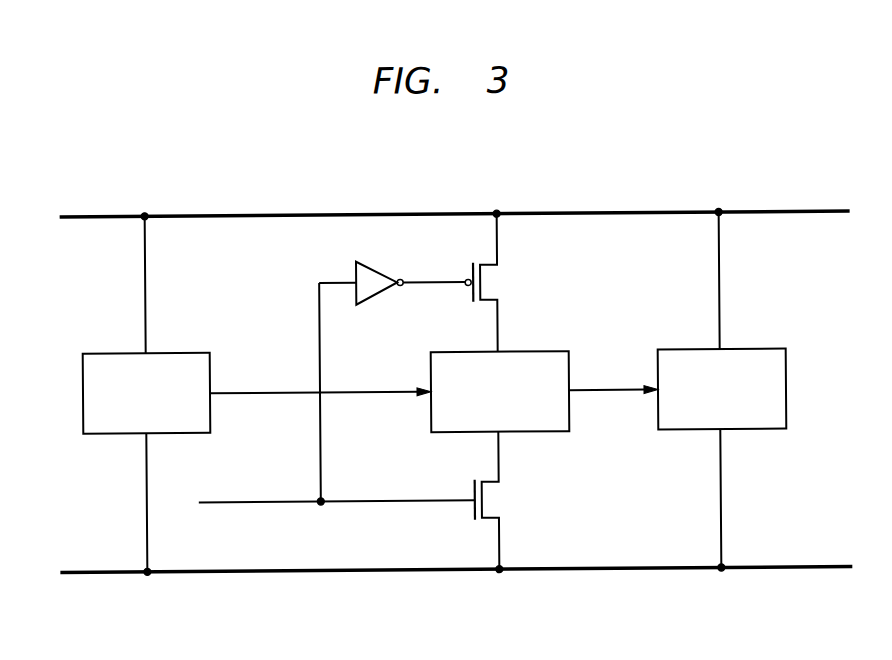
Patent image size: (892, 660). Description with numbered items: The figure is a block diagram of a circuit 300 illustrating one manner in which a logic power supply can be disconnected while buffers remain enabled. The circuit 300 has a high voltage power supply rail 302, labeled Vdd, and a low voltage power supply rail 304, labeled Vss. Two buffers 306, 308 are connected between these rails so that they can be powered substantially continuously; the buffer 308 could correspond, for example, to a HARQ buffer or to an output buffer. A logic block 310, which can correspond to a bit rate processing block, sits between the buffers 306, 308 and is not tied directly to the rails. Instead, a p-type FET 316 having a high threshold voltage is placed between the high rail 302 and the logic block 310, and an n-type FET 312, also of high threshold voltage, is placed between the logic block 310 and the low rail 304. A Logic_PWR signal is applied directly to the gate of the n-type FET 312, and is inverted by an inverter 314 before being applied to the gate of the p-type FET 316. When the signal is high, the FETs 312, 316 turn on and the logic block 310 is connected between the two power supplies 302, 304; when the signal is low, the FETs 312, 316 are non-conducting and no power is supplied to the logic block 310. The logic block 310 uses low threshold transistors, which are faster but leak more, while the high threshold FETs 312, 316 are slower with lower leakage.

The circuit 300 is at (682, 150).
The high voltage power supply rail 302 is at (789, 213).
The low voltage power supply rail 304 is at (789, 569).
The buffer 306 is at (167, 351).
The buffer 308 is at (750, 351).
The logic block 310 is at (543, 352).
The n-type FET (NFET) 312 is at (472, 510).
The inverter 314 is at (378, 263).
The p-type FET (PFET) 316 is at (468, 297).